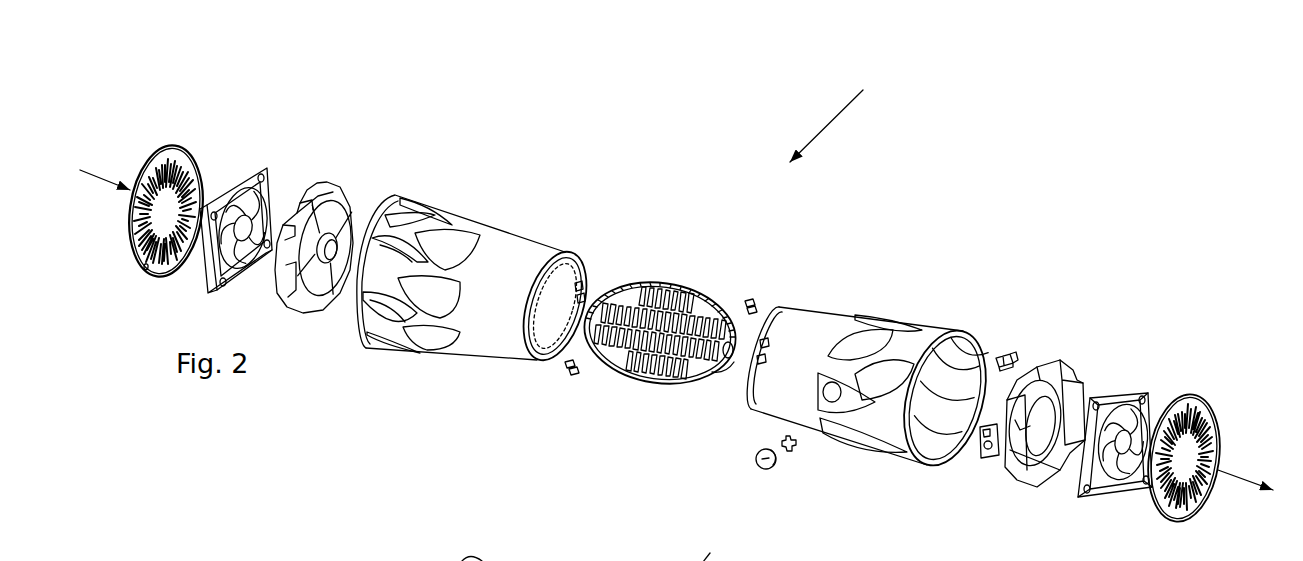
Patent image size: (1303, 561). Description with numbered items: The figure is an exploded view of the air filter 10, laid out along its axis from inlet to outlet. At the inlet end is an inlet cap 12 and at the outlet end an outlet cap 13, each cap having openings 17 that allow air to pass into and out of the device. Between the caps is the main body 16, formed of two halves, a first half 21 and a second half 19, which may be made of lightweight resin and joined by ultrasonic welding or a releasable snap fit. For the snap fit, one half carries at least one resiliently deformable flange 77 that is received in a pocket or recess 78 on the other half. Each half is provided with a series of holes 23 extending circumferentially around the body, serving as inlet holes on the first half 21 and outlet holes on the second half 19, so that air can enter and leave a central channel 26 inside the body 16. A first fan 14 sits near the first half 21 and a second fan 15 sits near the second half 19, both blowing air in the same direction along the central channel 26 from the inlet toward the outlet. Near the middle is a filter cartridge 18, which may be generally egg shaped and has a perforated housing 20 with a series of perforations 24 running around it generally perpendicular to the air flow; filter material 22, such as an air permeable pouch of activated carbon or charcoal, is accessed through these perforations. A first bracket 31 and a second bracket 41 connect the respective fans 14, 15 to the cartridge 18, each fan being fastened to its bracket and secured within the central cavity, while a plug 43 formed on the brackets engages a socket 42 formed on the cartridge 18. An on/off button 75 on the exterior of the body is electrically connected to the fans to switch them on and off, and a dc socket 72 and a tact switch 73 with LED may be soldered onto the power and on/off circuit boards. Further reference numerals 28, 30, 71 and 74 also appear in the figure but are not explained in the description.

The air filter 10 is at (792, 311).
The inlet cap 12 is at (179, 148).
The outlet cap 13 is at (1172, 403).
The first fan 14 is at (247, 167).
The second fan 15 is at (1108, 392).
The main body 16 is at (478, 358).
The openings 17 is at (190, 163).
The filter cartridge 18 is at (675, 277).
The second half 19 is at (828, 320).
The perforated housing 20 is at (610, 280).
The first half 21 is at (517, 250).
The filter material 22 is at (683, 290).
The holes 23 is at (425, 200).
The perforations 24 is at (640, 293).
The central channel 26 is at (567, 309).
The air inlet direction 28 is at (105, 169).
The air outlet direction 30 is at (1245, 459).
The first bracket 31 is at (332, 186).
The second bracket 41 is at (1045, 360).
The socket 42 is at (730, 362).
The plug 43 is at (332, 262).
The screws 71 is at (757, 298).
The dc socket 72 is at (1007, 352).
The tact switch 73 is at (982, 460).
The nut 74 is at (800, 447).
The on/off button 75 is at (779, 469).
The resiliently deformable flange 77 is at (575, 257).
The recess 78 is at (767, 310).